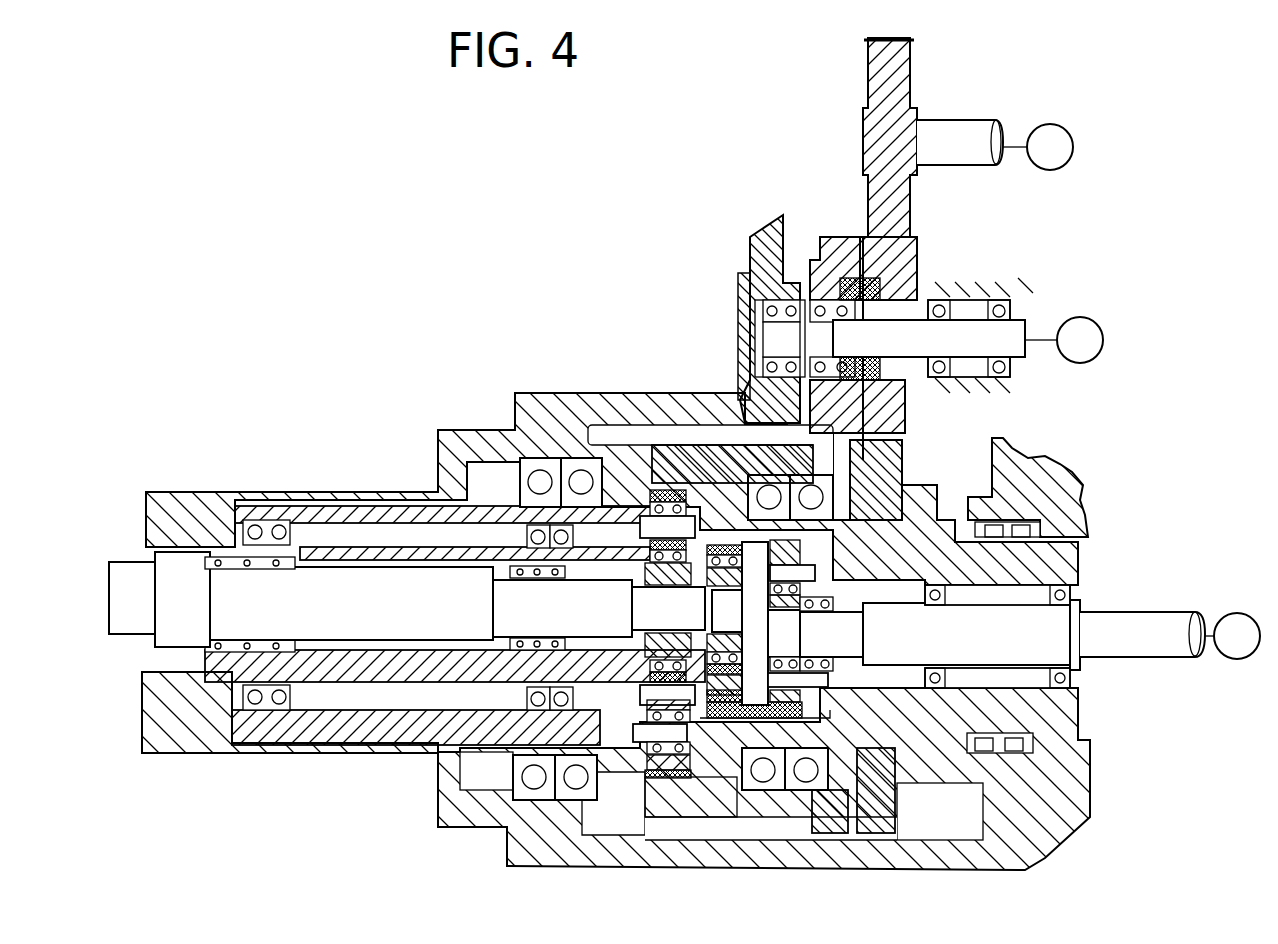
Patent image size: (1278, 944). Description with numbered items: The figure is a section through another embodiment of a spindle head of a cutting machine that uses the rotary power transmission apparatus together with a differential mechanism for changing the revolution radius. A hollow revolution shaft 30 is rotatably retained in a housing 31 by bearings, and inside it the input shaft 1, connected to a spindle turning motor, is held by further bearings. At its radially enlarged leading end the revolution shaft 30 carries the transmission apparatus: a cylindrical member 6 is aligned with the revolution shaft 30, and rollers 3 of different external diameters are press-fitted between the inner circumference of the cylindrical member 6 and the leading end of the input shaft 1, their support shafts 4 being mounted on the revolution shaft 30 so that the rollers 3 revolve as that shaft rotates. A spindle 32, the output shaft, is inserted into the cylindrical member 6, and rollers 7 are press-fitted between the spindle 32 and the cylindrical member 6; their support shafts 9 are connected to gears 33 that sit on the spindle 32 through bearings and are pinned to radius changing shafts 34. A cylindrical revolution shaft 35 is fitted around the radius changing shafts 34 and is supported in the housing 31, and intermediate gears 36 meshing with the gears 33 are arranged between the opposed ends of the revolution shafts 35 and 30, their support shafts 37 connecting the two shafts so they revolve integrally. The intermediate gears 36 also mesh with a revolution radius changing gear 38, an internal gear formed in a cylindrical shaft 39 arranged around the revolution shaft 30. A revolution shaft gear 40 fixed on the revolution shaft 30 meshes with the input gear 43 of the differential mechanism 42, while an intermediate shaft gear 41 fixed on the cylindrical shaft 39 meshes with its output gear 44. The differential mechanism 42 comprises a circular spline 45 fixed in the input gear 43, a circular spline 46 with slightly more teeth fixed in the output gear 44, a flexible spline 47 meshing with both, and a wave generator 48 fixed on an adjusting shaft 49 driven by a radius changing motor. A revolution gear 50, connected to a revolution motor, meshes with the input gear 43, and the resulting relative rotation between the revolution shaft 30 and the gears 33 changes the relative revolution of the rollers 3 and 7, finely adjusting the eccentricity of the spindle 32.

The input shaft 1 is at (1078, 620).
The rollers 3 is at (828, 686).
The support shafts 4 is at (828, 607).
The cylindrical member 6 is at (748, 712).
The rollers 7 is at (728, 632).
The support shafts 9 is at (755, 623).
The revolution shaft 30 is at (1062, 572).
The housing 31 is at (532, 400).
The spindle 32 is at (325, 575).
The gears 33 is at (632, 588).
The radius changing shafts 34 is at (362, 668).
The revolution shaft 35 is at (390, 508).
The intermediate gears 36 is at (662, 780).
The support shafts 37 is at (646, 762).
The revolution radius changing gear 38 is at (650, 492).
The cylindrical shaft 39 is at (665, 442).
The revolution shaft gear 40 is at (895, 472).
The intermediate shaft gear 41 is at (748, 400).
The differential mechanism 42 is at (899, 279).
The input gear 43 is at (914, 246).
The output gear 44 is at (832, 238).
The circular spline 45 is at (905, 426).
The circular spline 46 is at (862, 276).
The flexible spline 47 is at (940, 300).
The wave generator 48 is at (905, 383).
The adjusting shaft 49 is at (1038, 325).
The revolution gear 50 is at (905, 118).